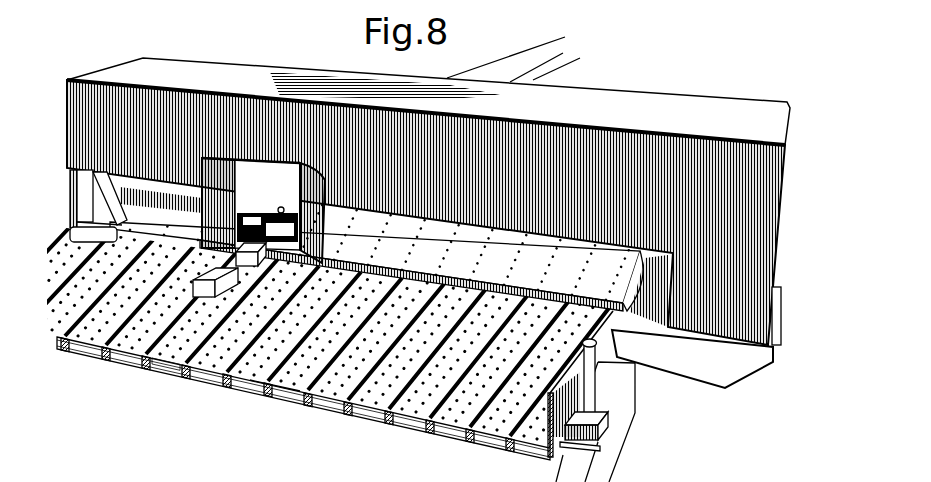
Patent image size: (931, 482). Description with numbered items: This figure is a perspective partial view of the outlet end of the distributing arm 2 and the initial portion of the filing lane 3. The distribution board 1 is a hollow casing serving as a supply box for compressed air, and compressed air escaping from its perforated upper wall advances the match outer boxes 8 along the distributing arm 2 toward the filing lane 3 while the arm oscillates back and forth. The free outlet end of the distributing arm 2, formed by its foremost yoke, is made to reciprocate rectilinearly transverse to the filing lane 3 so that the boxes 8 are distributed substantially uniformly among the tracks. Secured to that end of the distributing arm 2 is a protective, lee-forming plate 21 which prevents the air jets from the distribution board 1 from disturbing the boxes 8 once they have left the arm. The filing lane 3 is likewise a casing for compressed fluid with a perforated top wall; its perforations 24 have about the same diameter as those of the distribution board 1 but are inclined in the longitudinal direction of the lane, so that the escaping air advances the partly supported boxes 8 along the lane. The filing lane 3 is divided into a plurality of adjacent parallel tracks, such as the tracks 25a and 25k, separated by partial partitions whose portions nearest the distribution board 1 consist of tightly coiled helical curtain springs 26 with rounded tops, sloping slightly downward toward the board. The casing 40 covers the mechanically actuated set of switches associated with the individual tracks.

The distribution board 1 is at (627, 90).
The distributing arm 2 is at (544, 62).
The filing lane 3 is at (348, 423).
The match outer boxes 8 is at (232, 224).
The protective lee-forming plate 21 is at (292, 196).
The perforations 24 is at (293, 377).
The track 25a is at (530, 430).
The track 25k is at (115, 355).
The curtain springs 26 is at (200, 350).
The casing 40 is at (735, 107).